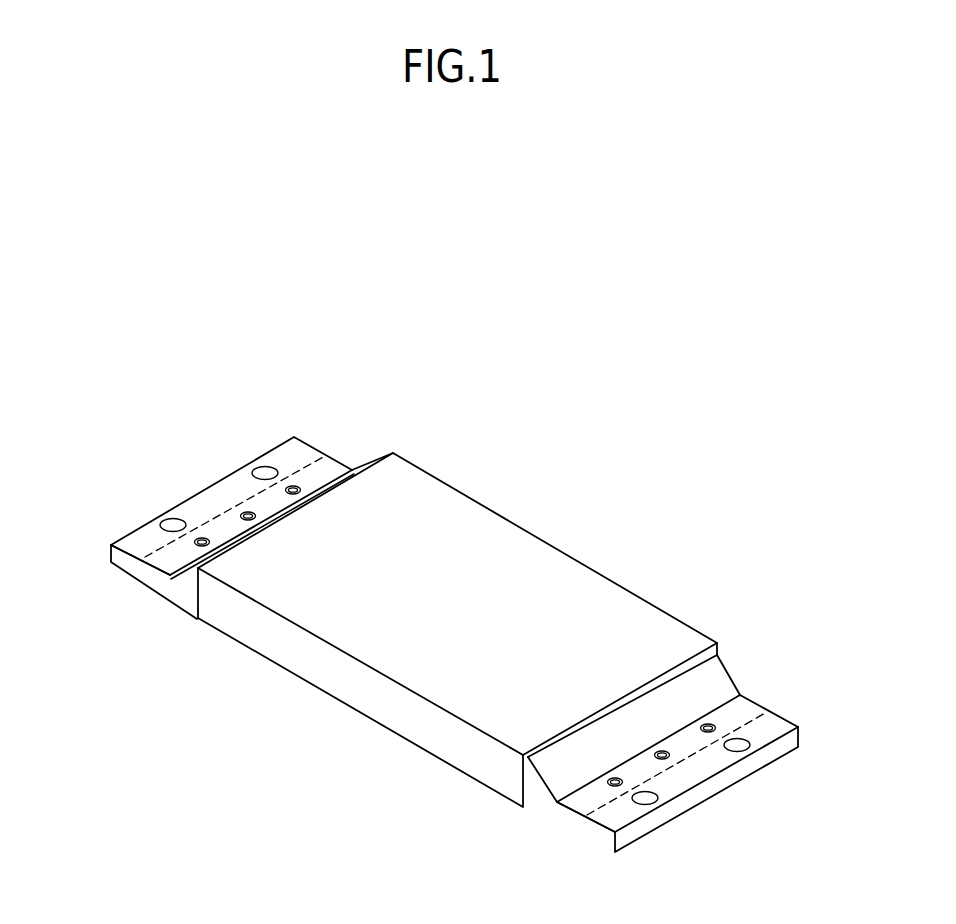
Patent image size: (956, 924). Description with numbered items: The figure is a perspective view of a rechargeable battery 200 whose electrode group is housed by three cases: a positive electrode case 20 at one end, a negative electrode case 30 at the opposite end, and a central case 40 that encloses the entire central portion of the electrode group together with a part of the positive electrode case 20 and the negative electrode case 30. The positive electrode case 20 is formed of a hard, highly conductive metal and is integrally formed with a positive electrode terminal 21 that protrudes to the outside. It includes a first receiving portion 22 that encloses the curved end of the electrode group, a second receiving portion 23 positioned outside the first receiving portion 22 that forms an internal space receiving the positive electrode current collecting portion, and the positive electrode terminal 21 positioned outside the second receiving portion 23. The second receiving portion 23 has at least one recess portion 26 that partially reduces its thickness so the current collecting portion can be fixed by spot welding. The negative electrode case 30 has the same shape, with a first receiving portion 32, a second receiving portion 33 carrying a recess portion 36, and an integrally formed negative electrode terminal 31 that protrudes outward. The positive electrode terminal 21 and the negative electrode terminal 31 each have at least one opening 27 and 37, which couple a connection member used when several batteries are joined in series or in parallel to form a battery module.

The rechargeable battery 200 is at (487, 251).
The central case 40 is at (448, 500).
The positive electrode case 20 is at (226, 519).
The positive electrode terminal 21 is at (138, 543).
The first receiving portion 22 is at (190, 582).
The second receiving portion 23 is at (162, 563).
The recess portion 26 is at (293, 487).
The opening 27 is at (265, 467).
The negative electrode case 30 is at (663, 758).
The negative electrode terminal 31 is at (627, 812).
The first receiving portion 32 is at (550, 782).
The second receiving portion 33 is at (575, 803).
The recess portion 36 is at (710, 727).
The opening 37 is at (747, 745).